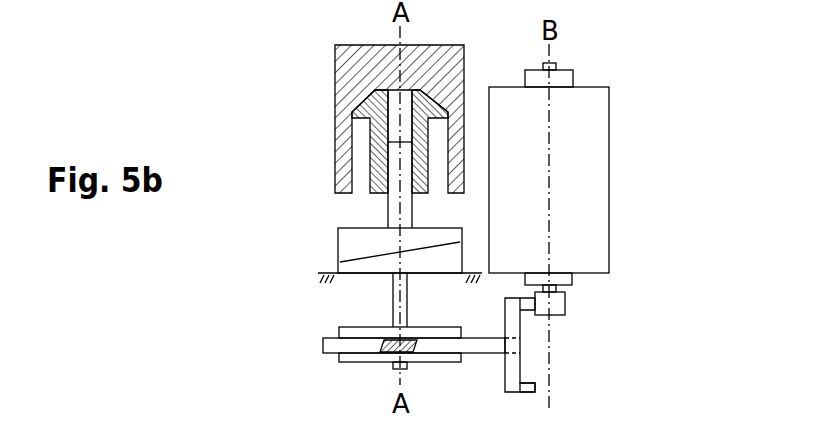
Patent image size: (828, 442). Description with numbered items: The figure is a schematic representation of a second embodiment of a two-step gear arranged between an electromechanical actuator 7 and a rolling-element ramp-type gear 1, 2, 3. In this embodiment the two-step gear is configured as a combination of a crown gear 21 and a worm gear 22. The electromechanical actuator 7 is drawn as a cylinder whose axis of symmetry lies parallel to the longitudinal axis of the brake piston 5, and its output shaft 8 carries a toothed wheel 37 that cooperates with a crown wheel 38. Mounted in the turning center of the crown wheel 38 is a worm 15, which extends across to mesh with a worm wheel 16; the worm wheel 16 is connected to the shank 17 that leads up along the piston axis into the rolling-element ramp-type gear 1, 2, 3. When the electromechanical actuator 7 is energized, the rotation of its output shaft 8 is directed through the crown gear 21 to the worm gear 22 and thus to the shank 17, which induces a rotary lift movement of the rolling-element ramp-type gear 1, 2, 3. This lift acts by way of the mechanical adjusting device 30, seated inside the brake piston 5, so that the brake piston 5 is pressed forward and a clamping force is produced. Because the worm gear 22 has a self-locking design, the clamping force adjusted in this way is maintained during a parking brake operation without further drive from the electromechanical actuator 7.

The rolling-element ramp-type gear 1 is at (351, 255).
The rolling-element ramp-type gear 2 is at (351, 255).
The rolling-element ramp-type gear 3 is at (345, 238).
The brake piston 5 is at (360, 64).
The electromechanical actuator 7 is at (583, 172).
The output shaft 8 is at (556, 289).
The worm 15 is at (487, 347).
The worm wheel 16 is at (440, 357).
The shank 17 is at (397, 304).
The crown gear 21 is at (556, 355).
The worm gear 22 is at (392, 384).
The mechanical adjusting device 30 is at (378, 152).
The toothed wheel 37 is at (558, 302).
The crown wheel 38 is at (538, 387).